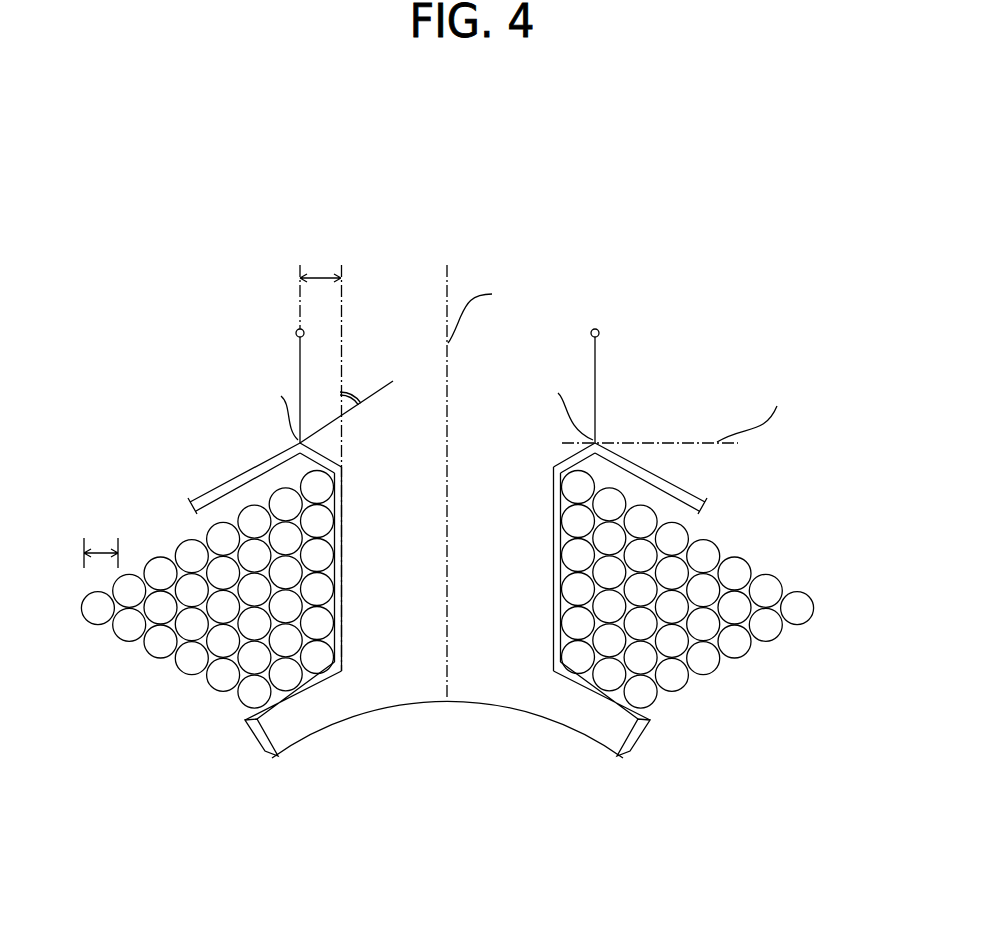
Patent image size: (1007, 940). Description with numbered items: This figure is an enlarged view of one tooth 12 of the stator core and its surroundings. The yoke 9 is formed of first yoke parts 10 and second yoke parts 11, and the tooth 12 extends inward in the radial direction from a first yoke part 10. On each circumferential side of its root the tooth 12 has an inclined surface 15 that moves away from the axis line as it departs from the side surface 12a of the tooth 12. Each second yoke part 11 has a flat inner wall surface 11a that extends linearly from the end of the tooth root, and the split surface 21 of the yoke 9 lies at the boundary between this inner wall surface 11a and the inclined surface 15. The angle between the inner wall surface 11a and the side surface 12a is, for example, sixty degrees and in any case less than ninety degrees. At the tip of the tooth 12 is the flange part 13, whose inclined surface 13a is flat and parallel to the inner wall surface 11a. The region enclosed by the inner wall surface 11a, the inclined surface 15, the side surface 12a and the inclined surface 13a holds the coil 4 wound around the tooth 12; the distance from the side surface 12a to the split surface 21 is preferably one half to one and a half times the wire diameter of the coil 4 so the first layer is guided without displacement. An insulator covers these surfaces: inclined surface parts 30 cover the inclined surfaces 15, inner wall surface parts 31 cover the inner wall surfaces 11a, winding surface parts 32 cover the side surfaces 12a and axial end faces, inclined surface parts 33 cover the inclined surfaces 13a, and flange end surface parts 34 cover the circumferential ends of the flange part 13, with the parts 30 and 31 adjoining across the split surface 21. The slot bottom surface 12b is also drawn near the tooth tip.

The yoke 9 is at (664, 138).
The first yoke part 10 is at (583, 234).
The second yoke part 11 is at (302, 234).
The inner wall surface 11a is at (232, 487).
The split surface 21 is at (297, 352).
The inclined surface 15 is at (315, 458).
The inclined surface part 30 is at (284, 462).
The inner wall surface part 31 is at (195, 500).
The winding surface part 32 is at (345, 518).
The inclined surface part 33 is at (248, 705).
The flange end surface part 34 is at (243, 745).
The coil 4 is at (160, 648).
The tooth 12 is at (478, 628).
The side surface 12a is at (347, 567).
The slot bottom surface 12b is at (400, 707).
The flange part 13 is at (290, 722).
The inclined surface 13a is at (280, 757).